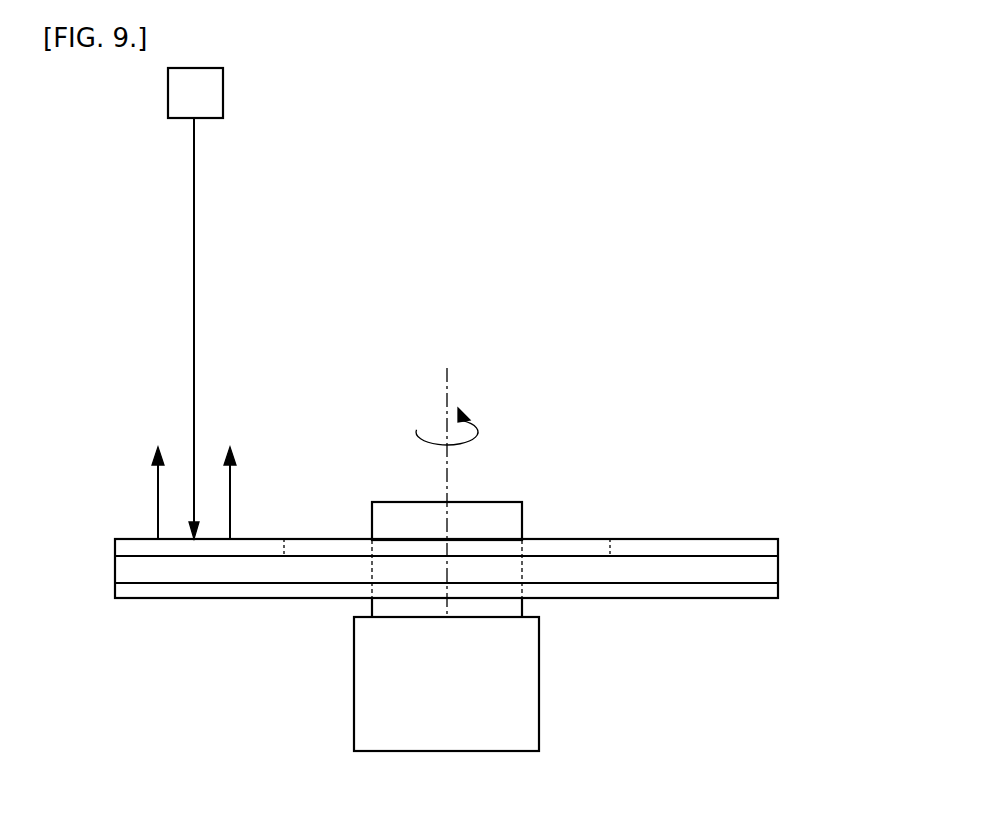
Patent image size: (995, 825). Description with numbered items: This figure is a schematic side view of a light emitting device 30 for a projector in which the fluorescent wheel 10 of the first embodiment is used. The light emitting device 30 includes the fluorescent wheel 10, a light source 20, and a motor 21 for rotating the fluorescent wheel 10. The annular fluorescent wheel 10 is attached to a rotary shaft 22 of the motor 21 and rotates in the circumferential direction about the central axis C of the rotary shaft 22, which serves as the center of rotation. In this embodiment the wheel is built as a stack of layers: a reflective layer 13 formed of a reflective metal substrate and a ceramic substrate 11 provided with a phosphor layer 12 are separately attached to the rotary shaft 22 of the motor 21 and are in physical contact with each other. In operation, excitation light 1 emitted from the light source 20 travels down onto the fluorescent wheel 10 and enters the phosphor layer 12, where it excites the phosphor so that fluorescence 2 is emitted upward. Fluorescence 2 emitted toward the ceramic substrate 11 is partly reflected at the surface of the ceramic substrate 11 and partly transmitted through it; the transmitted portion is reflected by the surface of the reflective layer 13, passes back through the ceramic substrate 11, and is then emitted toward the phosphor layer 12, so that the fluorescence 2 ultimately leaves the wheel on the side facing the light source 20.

The light source 20 is at (223, 93).
The excitation light 1 is at (195, 270).
The fluorescence 2 is at (157, 494).
The fluorescent wheel 10 is at (790, 568).
The phosphor layer 12 is at (700, 540).
The ceramic substrate 11 is at (702, 573).
The reflective layer 13 is at (781, 590).
The rotary shaft 22 is at (522, 517).
The motor 21 is at (553, 695).
The central axis C is at (448, 382).
The light emitting device 30 is at (674, 291).